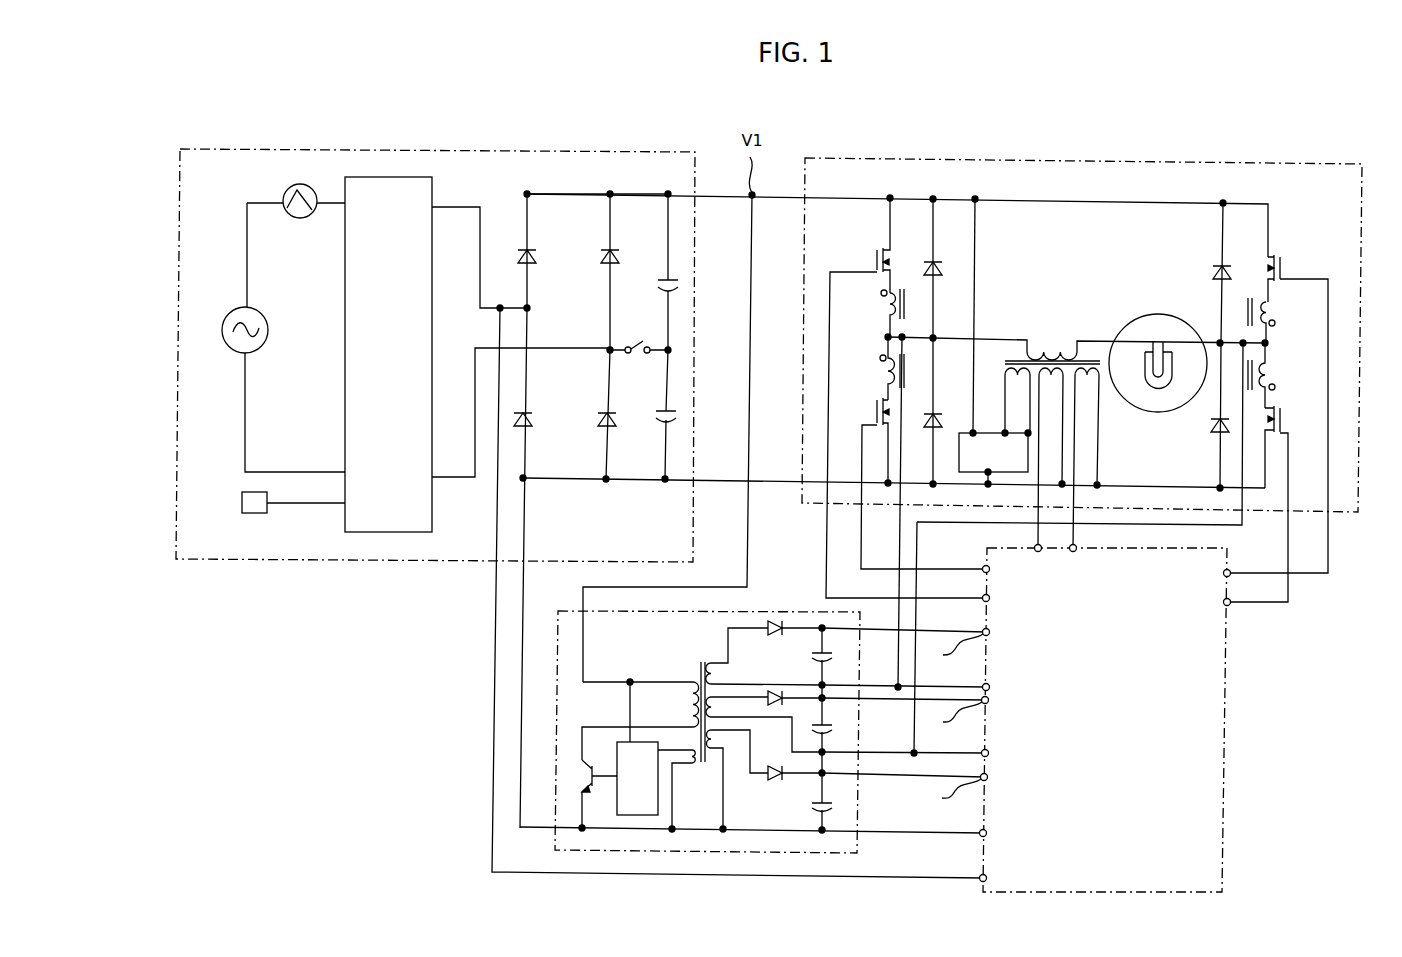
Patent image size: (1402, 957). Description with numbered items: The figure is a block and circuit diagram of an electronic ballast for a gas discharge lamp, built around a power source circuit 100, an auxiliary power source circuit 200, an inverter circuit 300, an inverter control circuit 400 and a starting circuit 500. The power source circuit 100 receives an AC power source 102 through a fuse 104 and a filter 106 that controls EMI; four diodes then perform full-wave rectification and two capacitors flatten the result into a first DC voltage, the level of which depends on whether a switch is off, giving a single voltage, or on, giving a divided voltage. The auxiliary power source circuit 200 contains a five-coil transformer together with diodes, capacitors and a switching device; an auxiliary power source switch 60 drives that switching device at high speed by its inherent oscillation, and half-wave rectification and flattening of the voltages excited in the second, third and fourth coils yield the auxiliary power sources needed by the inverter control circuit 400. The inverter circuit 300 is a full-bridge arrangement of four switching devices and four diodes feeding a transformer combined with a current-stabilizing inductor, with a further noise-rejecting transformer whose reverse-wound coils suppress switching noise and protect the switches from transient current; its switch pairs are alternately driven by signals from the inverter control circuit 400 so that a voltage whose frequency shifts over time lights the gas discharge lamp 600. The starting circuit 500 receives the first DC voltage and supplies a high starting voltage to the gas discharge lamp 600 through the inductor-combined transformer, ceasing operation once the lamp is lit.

The power source circuit 100 is at (452, 150).
The AC power source 102 is at (236, 312).
The fuse 104 is at (286, 193).
The filter 106 is at (433, 194).
The auxiliary power source circuit 200 is at (713, 853).
The inverter circuit 300 is at (1070, 162).
The inverter control circuit 400 is at (1105, 895).
The starting circuit 500 is at (985, 475).
The gas discharge lamp 600 is at (1158, 314).
The auxiliary power source switch 60 is at (630, 816).